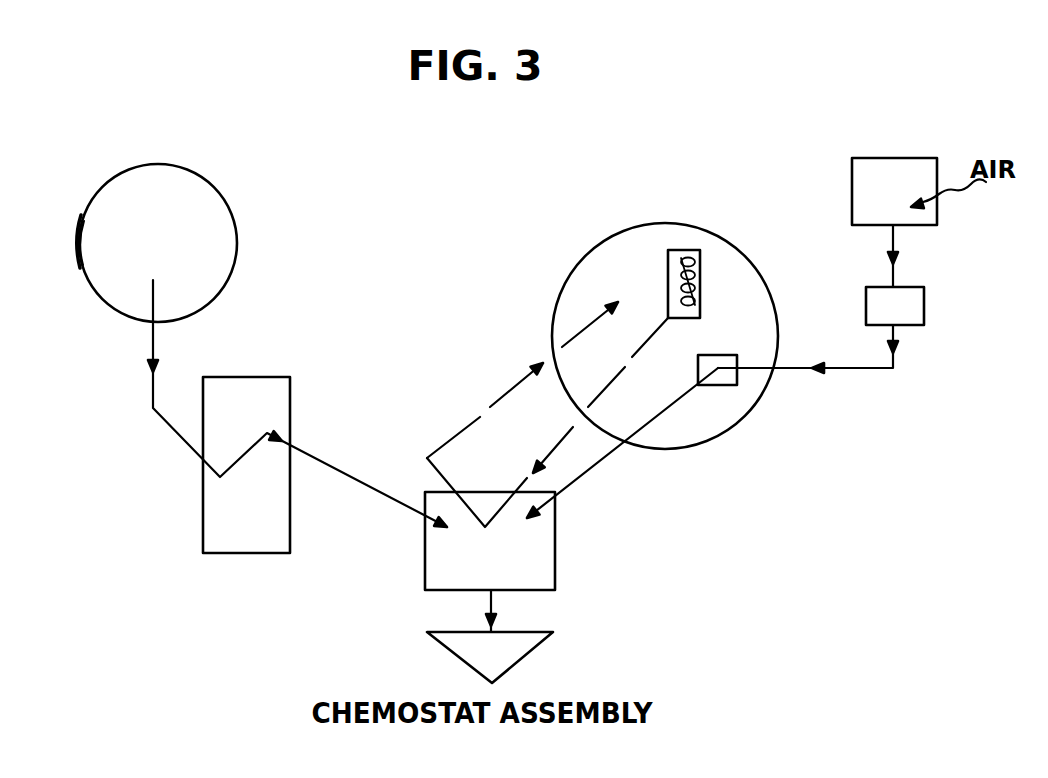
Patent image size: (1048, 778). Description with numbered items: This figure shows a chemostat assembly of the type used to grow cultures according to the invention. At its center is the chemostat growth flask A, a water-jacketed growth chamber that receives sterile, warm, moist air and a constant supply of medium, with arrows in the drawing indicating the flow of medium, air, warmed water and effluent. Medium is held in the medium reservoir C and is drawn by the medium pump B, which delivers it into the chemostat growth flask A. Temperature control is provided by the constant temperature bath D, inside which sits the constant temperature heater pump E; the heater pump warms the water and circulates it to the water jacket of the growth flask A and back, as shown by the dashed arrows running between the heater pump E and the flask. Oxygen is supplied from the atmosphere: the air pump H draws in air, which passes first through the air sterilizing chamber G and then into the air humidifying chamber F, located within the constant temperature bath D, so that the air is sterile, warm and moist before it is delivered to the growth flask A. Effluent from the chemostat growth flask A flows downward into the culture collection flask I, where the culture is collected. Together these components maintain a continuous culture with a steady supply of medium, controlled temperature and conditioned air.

The chemostat growth flask A is at (490, 541).
The medium pump B is at (246, 465).
The medium reservoir C is at (157, 243).
The constant temperature bath D is at (665, 336).
The constant temperature heater pump E is at (670, 284).
The air humidifying chamber F is at (717, 387).
The air sterilizing chamber G is at (895, 306).
The air pump H is at (894, 191).
The culture collection flask I is at (490, 657).